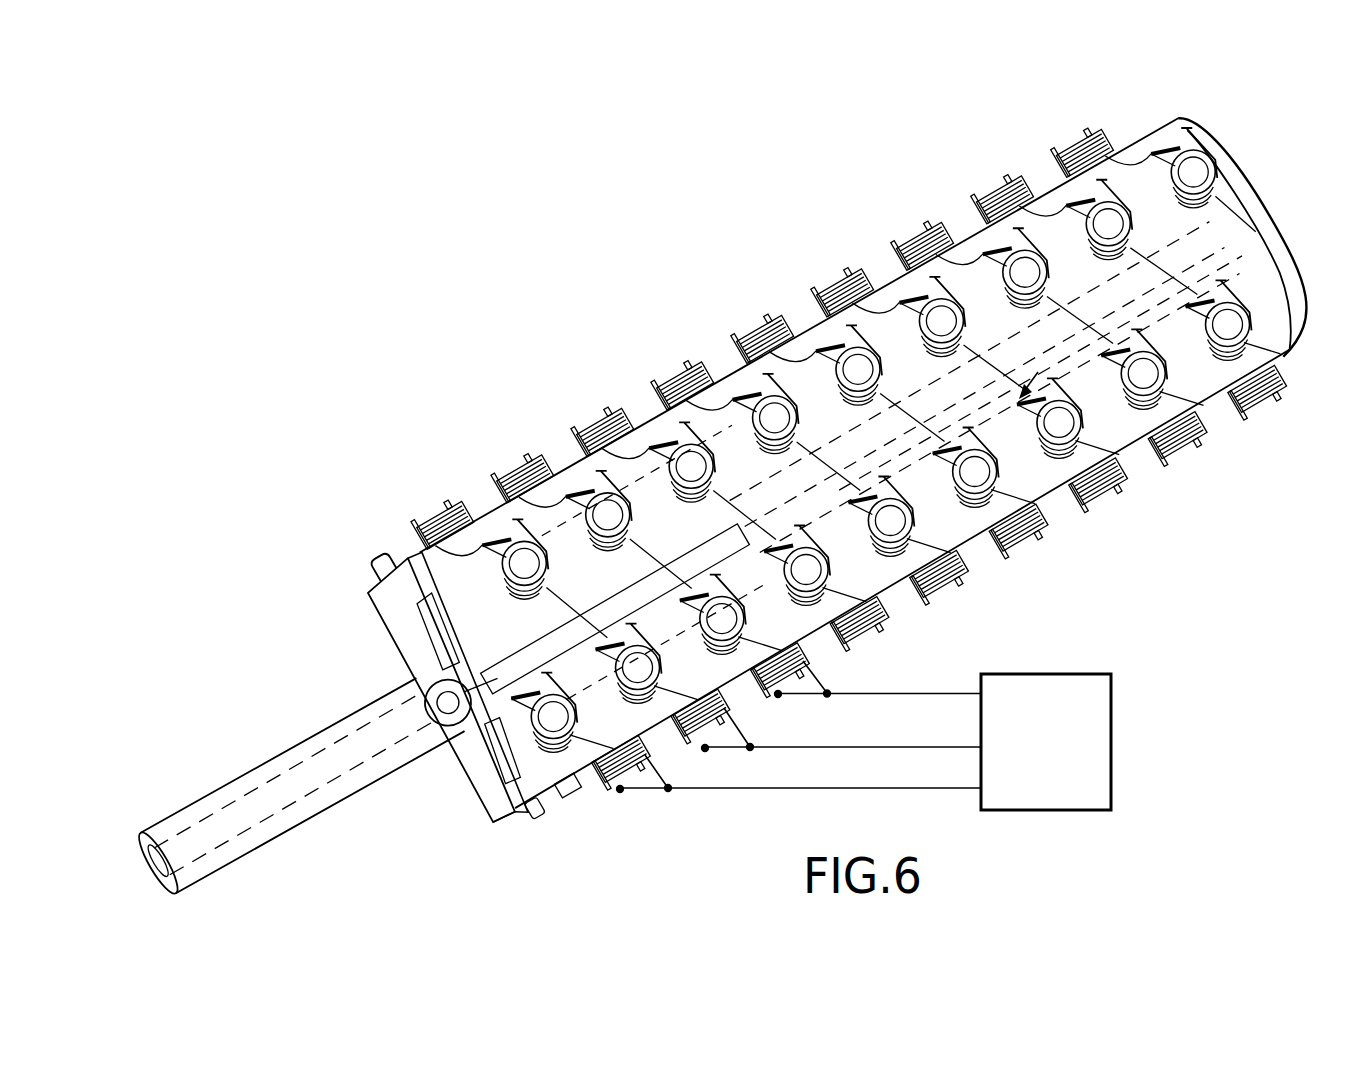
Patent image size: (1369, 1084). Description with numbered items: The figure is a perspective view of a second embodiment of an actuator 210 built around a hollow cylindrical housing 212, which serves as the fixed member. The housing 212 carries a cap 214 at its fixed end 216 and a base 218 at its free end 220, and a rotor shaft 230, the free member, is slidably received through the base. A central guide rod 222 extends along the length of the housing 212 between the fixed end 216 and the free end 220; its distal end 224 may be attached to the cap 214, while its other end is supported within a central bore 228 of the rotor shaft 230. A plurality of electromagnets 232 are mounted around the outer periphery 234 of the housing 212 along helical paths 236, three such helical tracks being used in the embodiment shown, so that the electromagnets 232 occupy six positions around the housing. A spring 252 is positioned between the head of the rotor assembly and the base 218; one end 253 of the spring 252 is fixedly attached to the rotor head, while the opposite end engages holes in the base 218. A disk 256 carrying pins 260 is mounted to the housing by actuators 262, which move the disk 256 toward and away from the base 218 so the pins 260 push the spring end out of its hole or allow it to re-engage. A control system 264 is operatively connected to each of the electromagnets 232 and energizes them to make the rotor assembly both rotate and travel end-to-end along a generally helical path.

The actuator 210 is at (372, 297).
The cylindrical housing 212 is at (882, 285).
The cap 214 is at (1213, 127).
The fixed end 216 is at (1155, 122).
The base 218 is at (472, 574).
The free end 220 is at (440, 546).
The guide rod 222 is at (1077, 490).
The distal end 224 is at (1243, 253).
The central bore 228 is at (160, 868).
The rotor shaft 230 is at (287, 784).
The electromagnets 232 is at (1290, 353).
The outer periphery 234 is at (1130, 445).
The helical paths 236 is at (1035, 193).
The spring 252 is at (641, 475).
The end of spring 253 is at (760, 609).
The disk 256 is at (478, 820).
The pins 260 is at (542, 812).
The actuators 262 is at (585, 788).
The control system 264 is at (1122, 745).